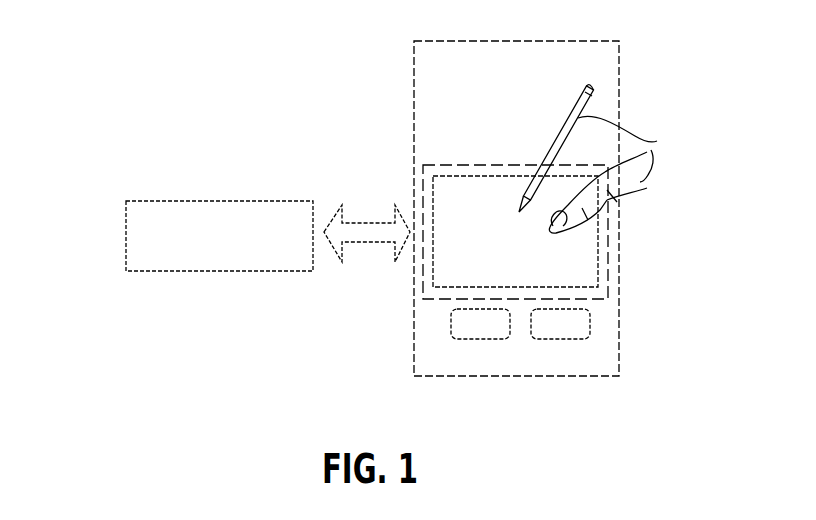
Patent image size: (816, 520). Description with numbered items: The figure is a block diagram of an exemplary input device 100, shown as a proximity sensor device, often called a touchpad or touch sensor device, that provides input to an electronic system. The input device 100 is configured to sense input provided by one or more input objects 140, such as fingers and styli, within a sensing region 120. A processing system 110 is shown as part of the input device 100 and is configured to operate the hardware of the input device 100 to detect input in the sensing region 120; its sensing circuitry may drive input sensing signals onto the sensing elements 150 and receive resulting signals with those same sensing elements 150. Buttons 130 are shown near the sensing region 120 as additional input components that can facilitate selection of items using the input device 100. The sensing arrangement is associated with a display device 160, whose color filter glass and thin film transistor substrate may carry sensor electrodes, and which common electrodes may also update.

The input device 100 is at (360, 72).
The processing system 110 is at (126, 232).
The sensing region 120 is at (612, 244).
The buttons 130 is at (483, 340).
The input object 140 is at (609, 159).
The sensing elements 150 is at (470, 165).
The display device 160 is at (620, 65).